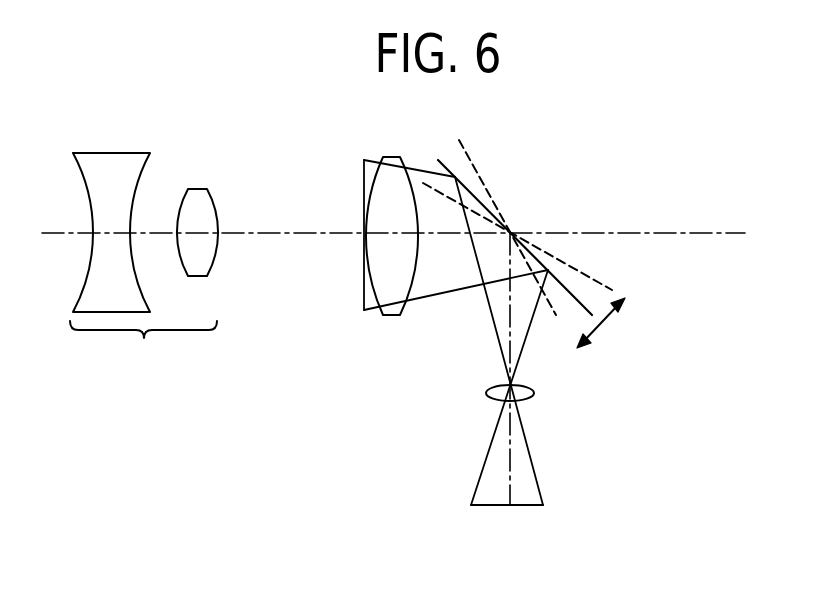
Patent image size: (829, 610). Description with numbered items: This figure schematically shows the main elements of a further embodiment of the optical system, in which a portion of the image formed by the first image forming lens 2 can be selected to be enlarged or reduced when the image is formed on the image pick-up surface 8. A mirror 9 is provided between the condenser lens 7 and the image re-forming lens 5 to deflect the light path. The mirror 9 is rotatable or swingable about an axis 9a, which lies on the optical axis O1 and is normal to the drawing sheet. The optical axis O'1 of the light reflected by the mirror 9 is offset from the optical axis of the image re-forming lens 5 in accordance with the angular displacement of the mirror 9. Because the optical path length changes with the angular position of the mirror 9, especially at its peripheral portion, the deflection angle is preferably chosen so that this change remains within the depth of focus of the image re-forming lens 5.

The first image forming lens 2 is at (144, 263).
The condenser lens 7 is at (391, 314).
The axis 9a is at (510, 233).
The mirror 9 is at (474, 171).
The image re-forming lens 5 is at (487, 394).
The image pick-up surface 8 is at (497, 507).
The optical axis O1 is at (283, 233).
The optical axis of the reflected light O'1 is at (557, 397).